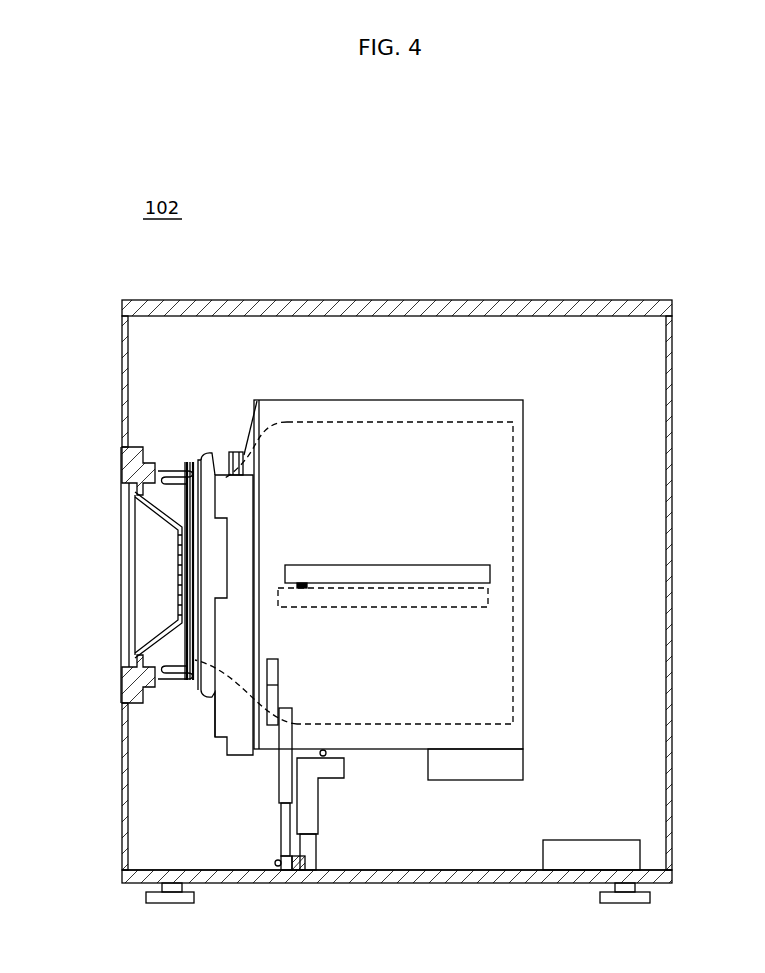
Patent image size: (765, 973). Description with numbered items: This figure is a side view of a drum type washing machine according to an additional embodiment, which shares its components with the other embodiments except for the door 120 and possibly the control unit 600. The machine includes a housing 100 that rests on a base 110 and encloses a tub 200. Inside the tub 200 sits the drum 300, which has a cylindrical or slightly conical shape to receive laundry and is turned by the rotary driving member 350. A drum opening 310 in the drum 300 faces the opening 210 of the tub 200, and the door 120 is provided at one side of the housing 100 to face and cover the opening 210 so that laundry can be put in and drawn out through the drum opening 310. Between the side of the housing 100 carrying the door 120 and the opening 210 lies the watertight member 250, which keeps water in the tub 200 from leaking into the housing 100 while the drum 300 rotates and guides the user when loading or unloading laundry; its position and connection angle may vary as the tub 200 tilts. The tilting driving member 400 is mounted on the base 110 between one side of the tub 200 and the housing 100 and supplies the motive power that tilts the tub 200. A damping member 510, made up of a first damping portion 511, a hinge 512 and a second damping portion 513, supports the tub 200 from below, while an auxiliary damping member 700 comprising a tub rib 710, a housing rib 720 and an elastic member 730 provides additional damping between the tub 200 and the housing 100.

The housing 100 is at (590, 312).
The base 110 is at (440, 883).
The door 120 is at (128, 604).
The tub 200 is at (524, 491).
The opening 210 is at (190, 480).
The watertight member 250 is at (170, 468).
The drum 300 is at (513, 455).
The drum opening 310 is at (232, 505).
The rotary driving member 350 is at (506, 762).
The tilting driving member 400 is at (322, 786).
The damping member 510 is at (262, 804).
The first damping portion 511 is at (286, 783).
The hinge 512 is at (278, 862).
The second damping portion 513 is at (300, 871).
The control unit 600 is at (583, 855).
The auxiliary damping member 700 is at (590, 560).
The tub rib 710 is at (491, 574).
The housing rib 720 is at (489, 600).
The elastic member 730 is at (303, 582).